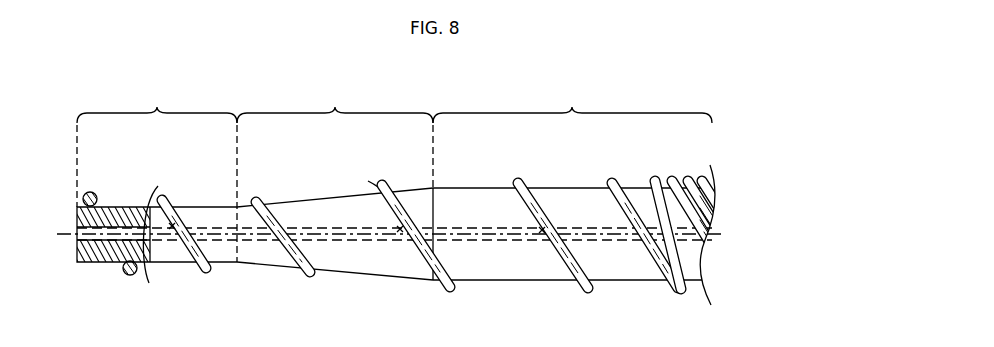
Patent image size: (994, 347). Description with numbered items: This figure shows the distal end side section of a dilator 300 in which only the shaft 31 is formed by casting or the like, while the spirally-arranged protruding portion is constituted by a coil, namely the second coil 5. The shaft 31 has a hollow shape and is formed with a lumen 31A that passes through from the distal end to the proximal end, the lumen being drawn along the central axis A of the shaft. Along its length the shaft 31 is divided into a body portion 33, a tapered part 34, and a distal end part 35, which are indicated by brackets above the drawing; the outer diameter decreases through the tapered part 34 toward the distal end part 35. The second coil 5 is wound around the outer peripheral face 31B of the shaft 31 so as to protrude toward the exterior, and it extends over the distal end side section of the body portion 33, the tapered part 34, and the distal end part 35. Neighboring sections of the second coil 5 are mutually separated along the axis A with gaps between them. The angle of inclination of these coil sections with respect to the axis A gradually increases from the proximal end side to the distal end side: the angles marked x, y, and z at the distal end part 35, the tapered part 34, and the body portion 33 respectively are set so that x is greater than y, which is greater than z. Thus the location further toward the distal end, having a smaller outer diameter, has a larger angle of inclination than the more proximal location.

The dilator 300 is at (744, 144).
The shaft 31 is at (690, 162).
The lumen 31A is at (108, 259).
The outer peripheral face 31B is at (553, 283).
The body portion 33 is at (572, 103).
The tapered part 34 is at (335, 135).
The distal end part 35 is at (157, 173).
The second coil 5 is at (310, 282).
The angle of inclination at distal end part x is at (170, 224).
The angle of inclination at tapered part y is at (398, 228).
The angle of inclination at body portion z is at (540, 229).
The axis A is at (68, 238).